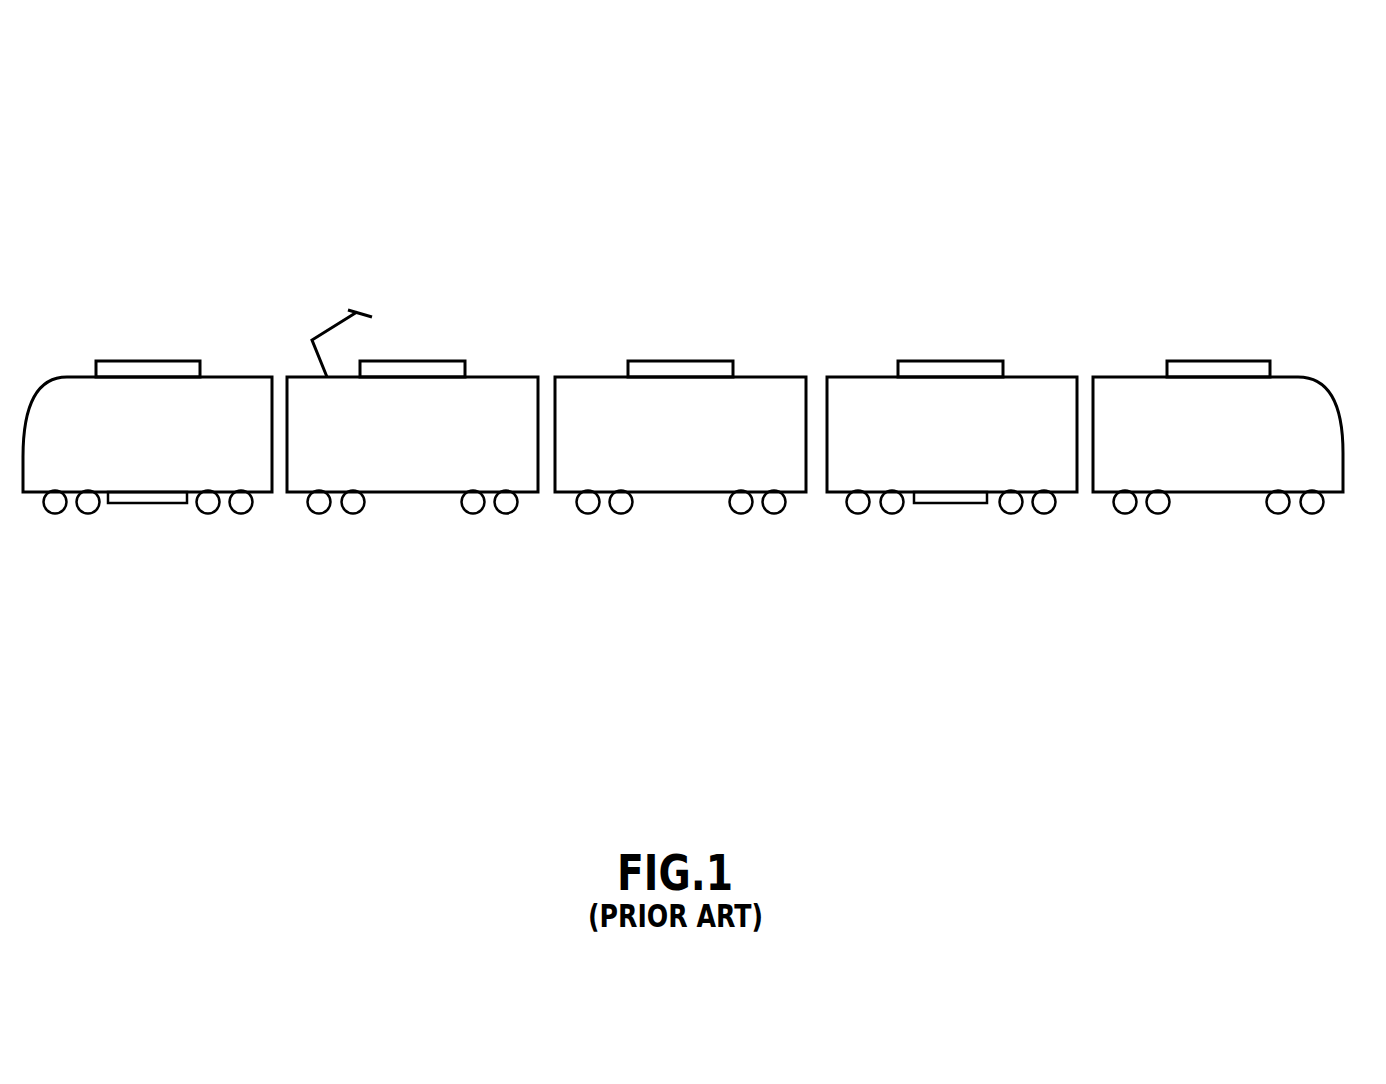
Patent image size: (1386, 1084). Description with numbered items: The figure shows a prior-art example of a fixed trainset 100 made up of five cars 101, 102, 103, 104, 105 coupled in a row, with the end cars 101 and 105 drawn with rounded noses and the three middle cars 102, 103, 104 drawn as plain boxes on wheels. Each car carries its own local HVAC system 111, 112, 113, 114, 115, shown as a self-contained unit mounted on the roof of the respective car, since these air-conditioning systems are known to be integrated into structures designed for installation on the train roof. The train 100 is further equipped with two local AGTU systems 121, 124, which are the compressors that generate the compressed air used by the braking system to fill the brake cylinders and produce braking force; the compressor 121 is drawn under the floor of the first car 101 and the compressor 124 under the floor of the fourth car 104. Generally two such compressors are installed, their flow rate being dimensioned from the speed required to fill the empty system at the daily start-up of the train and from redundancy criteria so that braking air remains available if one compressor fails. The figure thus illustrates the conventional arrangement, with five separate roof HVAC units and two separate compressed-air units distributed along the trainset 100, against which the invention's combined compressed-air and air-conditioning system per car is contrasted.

The fixed trainset 100 is at (1296, 256).
The car 101 is at (62, 417).
The car 102 is at (400, 458).
The car 103 is at (675, 460).
The car 104 is at (1048, 410).
The car 105 is at (1322, 457).
The local HVAC system 111 is at (170, 370).
The local HVAC system 112 is at (423, 370).
The local HVAC system 113 is at (675, 370).
The local HVAC system 114 is at (940, 367).
The local HVAC system 115 is at (1187, 367).
The local AGTU system 121 is at (148, 497).
The local AGTU system 124 is at (952, 503).